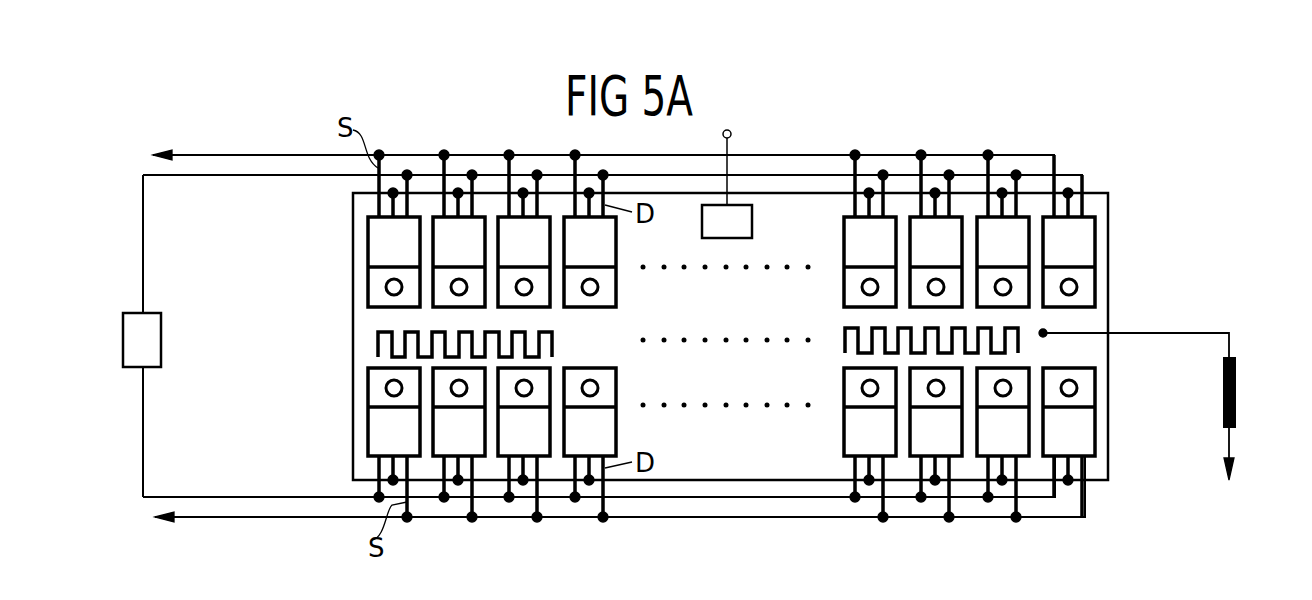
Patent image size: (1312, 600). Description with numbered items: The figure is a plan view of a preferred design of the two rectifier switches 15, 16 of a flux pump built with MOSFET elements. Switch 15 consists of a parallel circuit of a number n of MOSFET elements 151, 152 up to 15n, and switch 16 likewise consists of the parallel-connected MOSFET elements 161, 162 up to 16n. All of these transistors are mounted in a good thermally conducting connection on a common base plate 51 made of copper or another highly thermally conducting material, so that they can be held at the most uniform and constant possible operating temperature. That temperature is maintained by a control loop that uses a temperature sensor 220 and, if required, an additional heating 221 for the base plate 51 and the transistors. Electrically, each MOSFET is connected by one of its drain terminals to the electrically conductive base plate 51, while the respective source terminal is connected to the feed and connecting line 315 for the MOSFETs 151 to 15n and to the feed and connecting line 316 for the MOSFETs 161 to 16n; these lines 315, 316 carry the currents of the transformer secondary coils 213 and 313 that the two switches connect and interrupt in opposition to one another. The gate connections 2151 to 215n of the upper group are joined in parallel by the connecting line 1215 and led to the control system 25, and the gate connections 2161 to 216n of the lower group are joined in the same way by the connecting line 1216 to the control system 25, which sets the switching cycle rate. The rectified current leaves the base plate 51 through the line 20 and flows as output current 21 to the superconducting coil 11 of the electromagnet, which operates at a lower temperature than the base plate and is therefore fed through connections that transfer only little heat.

The superconducting coil 11 is at (1238, 395).
The switch 15 is at (685, 208).
The MOSFET element 151 is at (391, 208).
The MOSFET element 152 is at (442, 240).
The MOSFET element 15n is at (1109, 230).
The switch 16 is at (687, 445).
The MOSFET element 161 is at (344, 445).
The MOSFET element 162 is at (442, 423).
The MOSFET element 16n is at (1111, 445).
The line 20 is at (1198, 331).
The line 21 is at (1231, 472).
The control system 25 is at (122, 340).
The base plate 51 is at (720, 385).
The secondary coil 213 is at (153, 158).
The field effect electrode connection 2151 is at (409, 183).
The field effect electrode connection 215n is at (1085, 178).
The field effect connection 2161 is at (326, 479).
The field effect connection 216n is at (1060, 488).
The temperature sensor 220 is at (754, 222).
The heating 221 is at (553, 343).
The secondary coil 313 is at (156, 523).
The feed and connecting line 315 is at (277, 154).
The feed and connecting line 316 is at (270, 519).
The connecting line 1215 is at (142, 243).
The connecting line 1216 is at (142, 441).